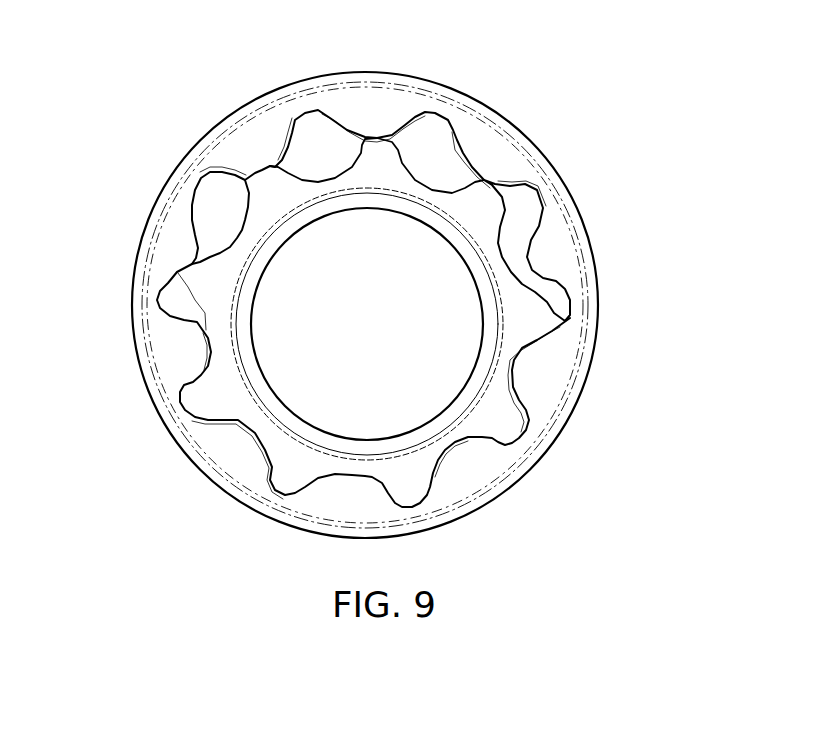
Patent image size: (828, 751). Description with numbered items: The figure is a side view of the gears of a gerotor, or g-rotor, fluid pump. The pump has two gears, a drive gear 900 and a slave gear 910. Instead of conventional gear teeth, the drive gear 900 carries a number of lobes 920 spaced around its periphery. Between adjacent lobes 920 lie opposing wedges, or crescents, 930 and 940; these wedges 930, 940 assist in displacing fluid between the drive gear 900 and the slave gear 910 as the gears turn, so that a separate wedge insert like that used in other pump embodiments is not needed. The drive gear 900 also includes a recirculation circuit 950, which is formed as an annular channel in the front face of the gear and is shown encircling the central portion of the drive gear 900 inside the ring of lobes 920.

The drive gear 900 is at (545, 315).
The slave gear 910 is at (567, 250).
The lobes 920 is at (375, 155).
The wedge 930 is at (312, 183).
The wedge 940 is at (350, 132).
The recirculation circuit 950 is at (220, 318).